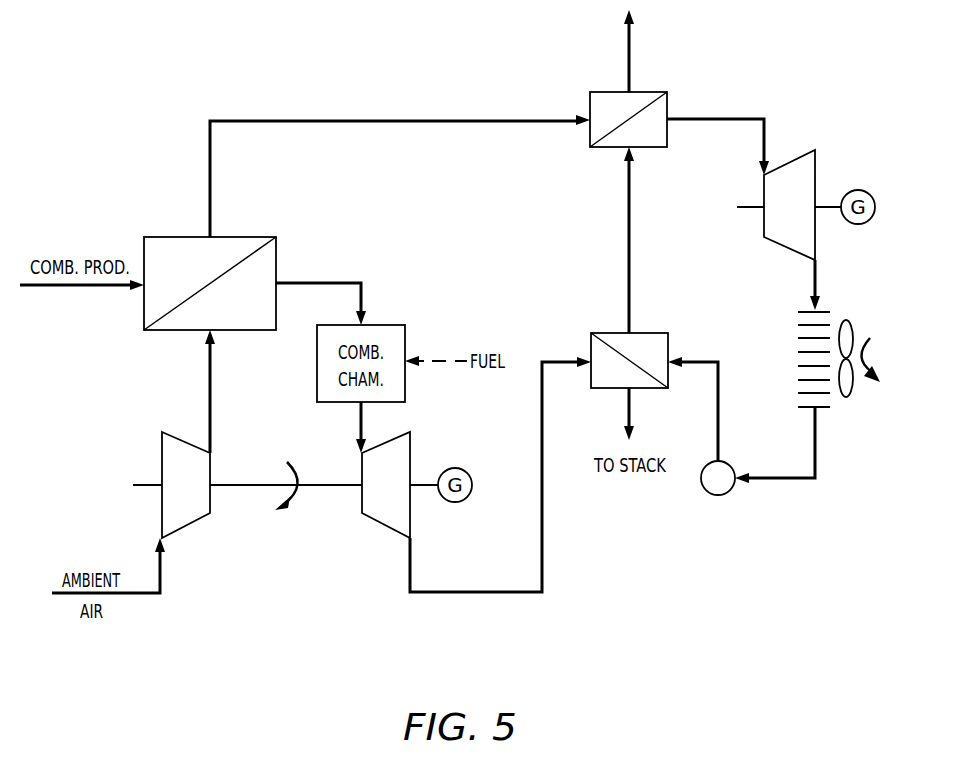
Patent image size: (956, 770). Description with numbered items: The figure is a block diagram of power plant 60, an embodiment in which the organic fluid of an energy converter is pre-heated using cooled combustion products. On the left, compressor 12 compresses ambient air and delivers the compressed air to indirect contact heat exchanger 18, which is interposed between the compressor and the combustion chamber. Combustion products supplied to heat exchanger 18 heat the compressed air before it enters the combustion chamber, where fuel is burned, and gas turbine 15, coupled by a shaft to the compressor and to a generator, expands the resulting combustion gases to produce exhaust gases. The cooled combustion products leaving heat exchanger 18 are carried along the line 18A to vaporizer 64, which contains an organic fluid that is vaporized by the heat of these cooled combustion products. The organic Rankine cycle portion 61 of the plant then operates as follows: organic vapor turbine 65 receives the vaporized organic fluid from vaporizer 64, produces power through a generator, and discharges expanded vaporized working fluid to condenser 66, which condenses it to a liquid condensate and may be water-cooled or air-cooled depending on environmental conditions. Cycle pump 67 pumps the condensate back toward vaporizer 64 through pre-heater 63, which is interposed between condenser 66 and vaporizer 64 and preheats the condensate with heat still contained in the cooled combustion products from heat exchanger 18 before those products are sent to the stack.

The compressor 12 is at (162, 432).
The gas turbine 15 is at (410, 432).
The indirect contact heat exchanger 18 is at (249, 237).
The cooled combustion products line 18A is at (490, 120).
The power plant 60 is at (662, 565).
The organic Rankine cycle system 61 is at (758, 85).
The pre-heater 63 is at (648, 333).
The vaporizer 64 is at (646, 62).
The organic vapor turbine 65 is at (815, 157).
The condenser 66 is at (844, 430).
The cycle pump 67 is at (718, 495).